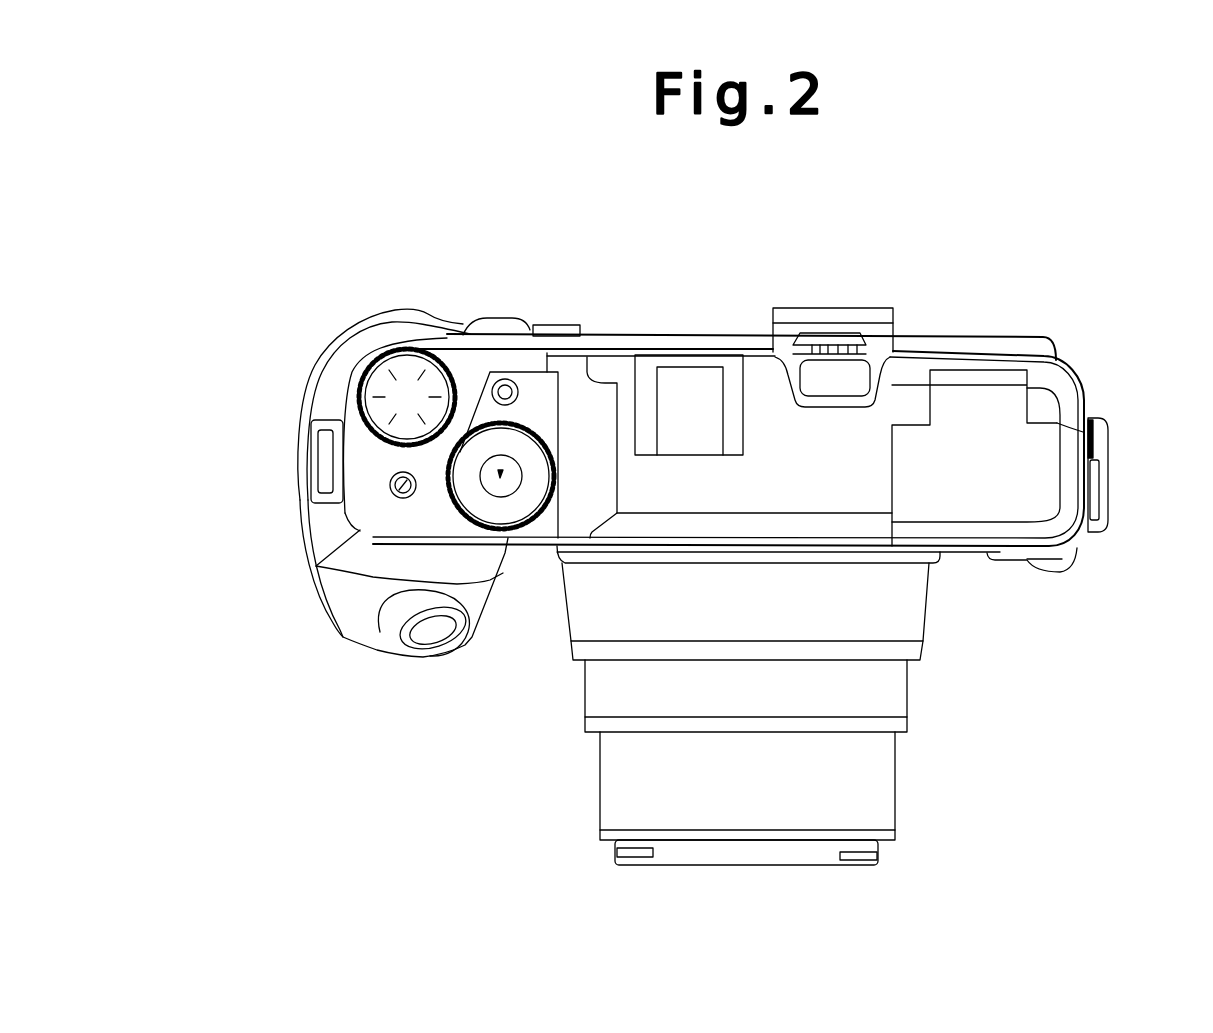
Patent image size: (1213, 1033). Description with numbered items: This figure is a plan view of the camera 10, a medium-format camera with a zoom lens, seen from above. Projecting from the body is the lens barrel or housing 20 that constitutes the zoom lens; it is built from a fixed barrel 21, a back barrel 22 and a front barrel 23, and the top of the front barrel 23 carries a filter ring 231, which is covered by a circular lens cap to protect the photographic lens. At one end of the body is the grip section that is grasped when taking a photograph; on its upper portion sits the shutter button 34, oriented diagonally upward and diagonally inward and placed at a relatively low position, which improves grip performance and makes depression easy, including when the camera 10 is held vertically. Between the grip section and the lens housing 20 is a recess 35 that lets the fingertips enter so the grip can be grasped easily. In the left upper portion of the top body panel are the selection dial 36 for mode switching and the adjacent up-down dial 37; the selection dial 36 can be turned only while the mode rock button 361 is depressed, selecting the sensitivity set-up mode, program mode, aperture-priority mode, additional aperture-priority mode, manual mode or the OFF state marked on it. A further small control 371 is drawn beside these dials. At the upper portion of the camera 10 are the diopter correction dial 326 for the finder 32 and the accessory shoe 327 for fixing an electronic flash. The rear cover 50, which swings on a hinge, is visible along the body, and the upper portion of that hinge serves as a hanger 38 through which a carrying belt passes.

The camera 10 is at (1080, 333).
The lens barrel or housing 20 is at (834, 723).
The fixed barrel 21 is at (905, 627).
The back barrel 22 is at (890, 703).
The front barrel 23 is at (877, 803).
The filter ring 231 is at (827, 857).
The finder 32 is at (820, 322).
The diopter correction dial 326 is at (843, 340).
The accessory shoe 327 is at (687, 393).
The shutter button 34 is at (433, 640).
The recess 35 is at (527, 563).
The selection dial 36 is at (532, 437).
The mode rock button 361 is at (507, 379).
The up-down dial 37 is at (410, 362).
The button 371 is at (398, 497).
The hanger 38 is at (317, 462).
The rear cover 50 is at (388, 312).